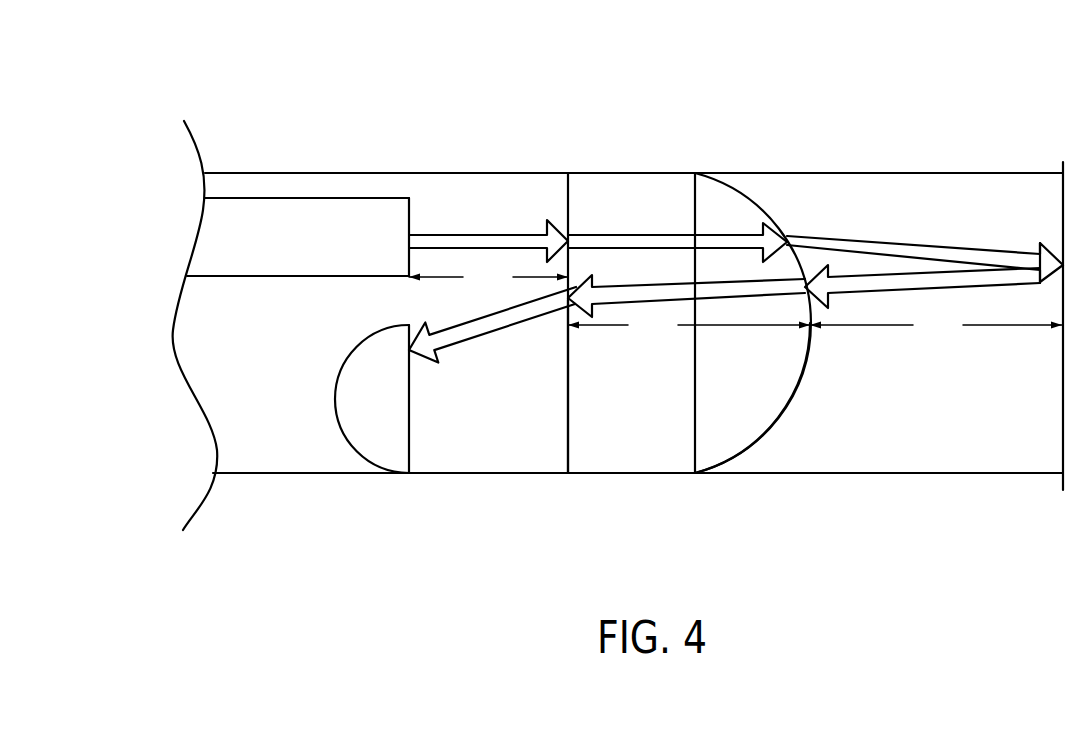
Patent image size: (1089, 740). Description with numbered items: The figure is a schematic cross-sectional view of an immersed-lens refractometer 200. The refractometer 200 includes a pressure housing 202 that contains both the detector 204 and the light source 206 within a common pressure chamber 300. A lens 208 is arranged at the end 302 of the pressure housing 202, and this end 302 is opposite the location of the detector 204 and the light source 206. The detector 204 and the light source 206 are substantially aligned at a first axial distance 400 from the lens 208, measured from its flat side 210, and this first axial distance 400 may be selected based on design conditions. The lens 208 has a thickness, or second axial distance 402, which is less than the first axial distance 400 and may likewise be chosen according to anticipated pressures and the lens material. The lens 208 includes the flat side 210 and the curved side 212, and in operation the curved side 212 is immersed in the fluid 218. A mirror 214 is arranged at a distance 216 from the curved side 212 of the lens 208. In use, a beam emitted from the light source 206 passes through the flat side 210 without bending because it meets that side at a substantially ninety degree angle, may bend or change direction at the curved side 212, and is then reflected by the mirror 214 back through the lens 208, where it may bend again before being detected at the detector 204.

The refractometer 200 is at (282, 100).
The pressure housing 202 is at (471, 174).
The detector 204 is at (375, 432).
The light source 206 is at (317, 235).
The lens 208 is at (720, 197).
The flat side 210 is at (568, 442).
The curved side 212 is at (757, 442).
The mirror 214 is at (1062, 432).
The distance 216 is at (936, 324).
The fluid 218 is at (930, 227).
The pressure chamber 300 is at (275, 462).
The end 302 is at (633, 168).
The first axial distance 400 is at (488, 276).
The second axial distance 402 is at (689, 324).